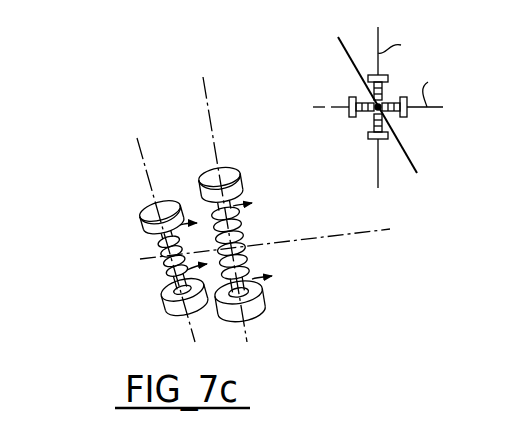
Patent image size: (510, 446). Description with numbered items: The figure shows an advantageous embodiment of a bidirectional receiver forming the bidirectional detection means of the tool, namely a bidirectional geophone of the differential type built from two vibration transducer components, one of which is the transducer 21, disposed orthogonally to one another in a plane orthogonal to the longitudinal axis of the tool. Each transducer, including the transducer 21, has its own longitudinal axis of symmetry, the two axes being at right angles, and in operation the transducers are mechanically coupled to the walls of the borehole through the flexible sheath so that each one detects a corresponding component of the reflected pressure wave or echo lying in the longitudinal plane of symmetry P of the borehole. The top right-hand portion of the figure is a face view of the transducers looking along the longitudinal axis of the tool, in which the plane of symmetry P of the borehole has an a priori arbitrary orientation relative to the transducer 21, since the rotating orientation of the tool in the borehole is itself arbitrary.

The vibration transducer component 21 is at (140, 235).
The longitudinal plane of symmetry of the borehole P is at (415, 167).